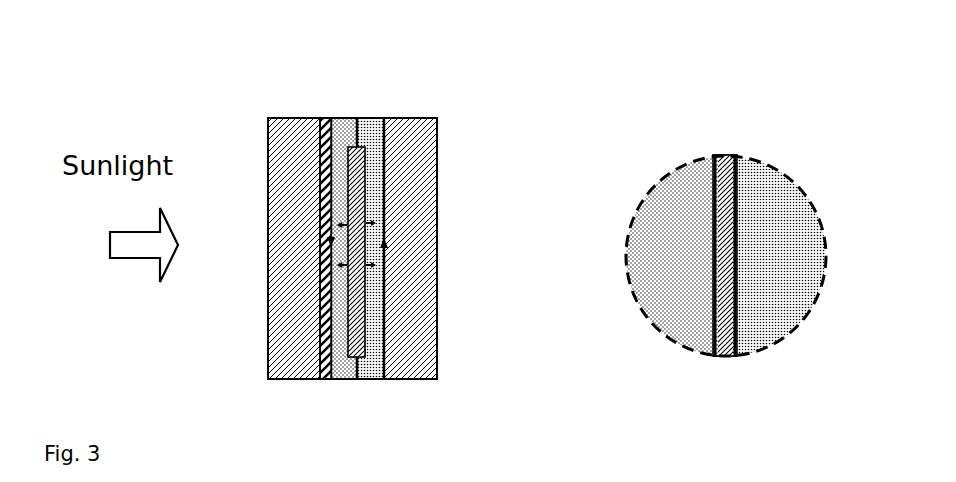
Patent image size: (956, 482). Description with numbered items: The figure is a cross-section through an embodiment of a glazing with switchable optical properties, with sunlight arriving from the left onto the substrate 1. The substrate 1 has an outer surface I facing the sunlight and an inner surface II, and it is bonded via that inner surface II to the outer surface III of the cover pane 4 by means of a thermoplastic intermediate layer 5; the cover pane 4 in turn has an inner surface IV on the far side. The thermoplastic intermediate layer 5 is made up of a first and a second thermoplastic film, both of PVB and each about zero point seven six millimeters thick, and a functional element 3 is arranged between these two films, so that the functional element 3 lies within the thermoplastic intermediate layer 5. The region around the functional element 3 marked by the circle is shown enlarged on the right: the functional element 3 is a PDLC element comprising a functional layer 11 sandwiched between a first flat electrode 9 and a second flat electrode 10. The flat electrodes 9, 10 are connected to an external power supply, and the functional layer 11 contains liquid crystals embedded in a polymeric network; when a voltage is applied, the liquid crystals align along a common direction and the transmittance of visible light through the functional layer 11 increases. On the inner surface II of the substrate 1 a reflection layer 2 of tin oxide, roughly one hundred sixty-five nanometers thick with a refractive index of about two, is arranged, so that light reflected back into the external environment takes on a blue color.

The substrate 1 is at (294, 343).
The reflection layer 2 is at (325, 122).
The functional element 3 is at (356, 163).
The cover pane 4 is at (409, 340).
The thermoplastic intermediate layer 5 is at (361, 226).
The first flat electrode 9 is at (738, 158).
The second flat electrode 10 is at (714, 158).
The functional layer 11 is at (725, 155).
The outer surface of the substrate I is at (266, 316).
The inner surface of the substrate II is at (312, 273).
The outer surface of the cover pane III is at (392, 203).
The inner surface of the cover pane IV is at (443, 257).